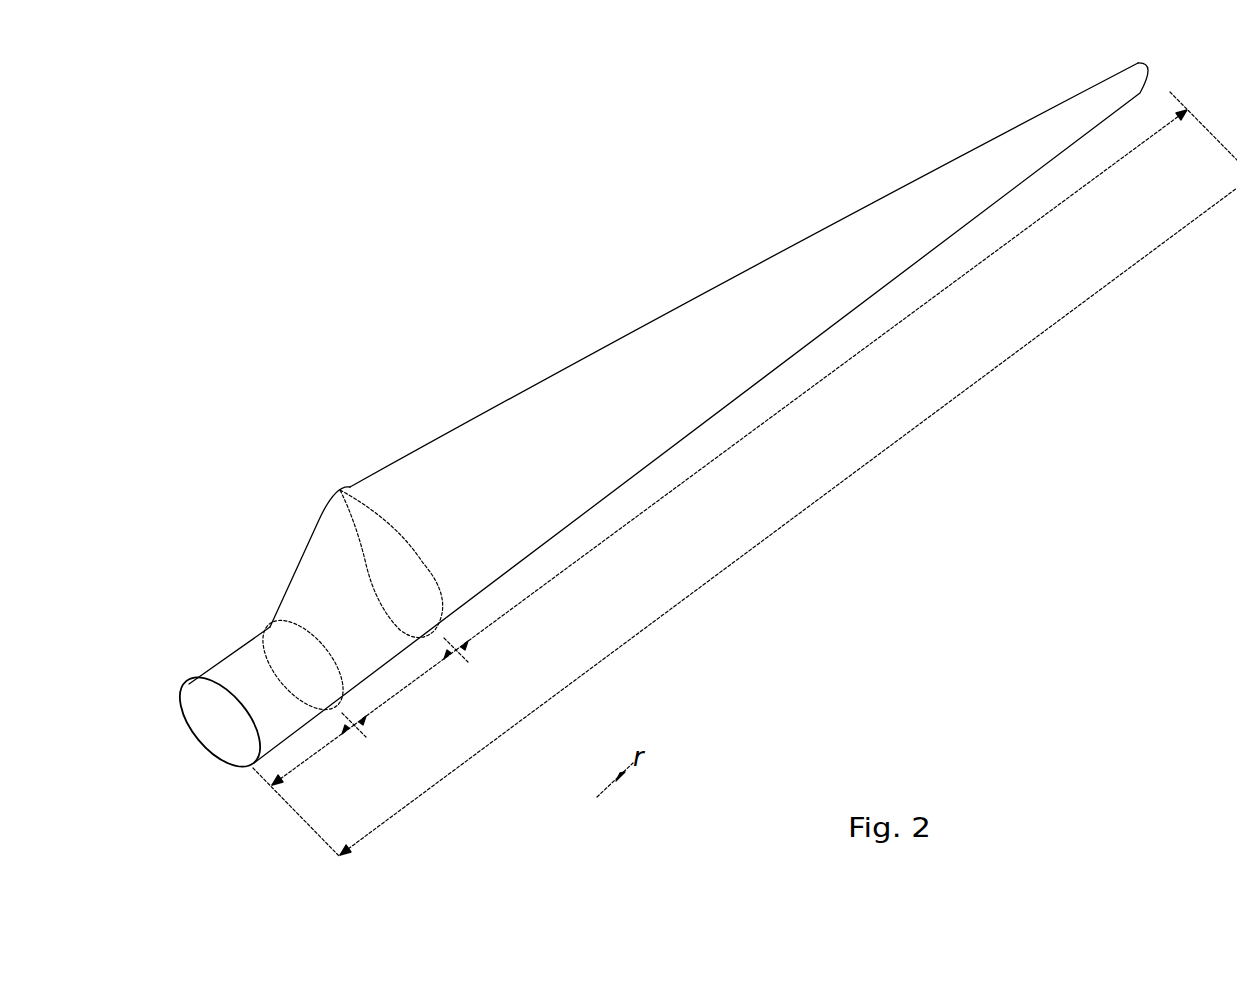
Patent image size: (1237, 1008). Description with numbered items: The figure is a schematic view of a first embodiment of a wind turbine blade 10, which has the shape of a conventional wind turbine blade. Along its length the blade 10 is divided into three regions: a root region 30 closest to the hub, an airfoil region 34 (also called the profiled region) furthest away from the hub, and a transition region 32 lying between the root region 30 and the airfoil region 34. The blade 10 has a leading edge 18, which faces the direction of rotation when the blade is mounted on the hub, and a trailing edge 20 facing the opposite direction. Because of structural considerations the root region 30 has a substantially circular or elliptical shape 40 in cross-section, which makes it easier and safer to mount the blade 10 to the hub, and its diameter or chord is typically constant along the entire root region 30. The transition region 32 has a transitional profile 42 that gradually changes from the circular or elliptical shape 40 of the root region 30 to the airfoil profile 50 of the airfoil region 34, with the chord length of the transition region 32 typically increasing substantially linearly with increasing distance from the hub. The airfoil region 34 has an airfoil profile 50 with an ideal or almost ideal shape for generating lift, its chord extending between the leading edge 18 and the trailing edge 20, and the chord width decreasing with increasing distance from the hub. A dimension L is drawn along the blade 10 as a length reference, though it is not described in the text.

The wind turbine blade 10 is at (497, 287).
The leading edge 18 is at (855, 311).
The trailing edge 20 is at (860, 205).
The root region 30 is at (318, 757).
The transition region 32 is at (412, 688).
The airfoil region 34 is at (748, 436).
The circular or elliptical shape 40 is at (220, 645).
The transitional profile 42 is at (295, 543).
The airfoil profile 50 is at (712, 267).
The blade length L is at (782, 526).